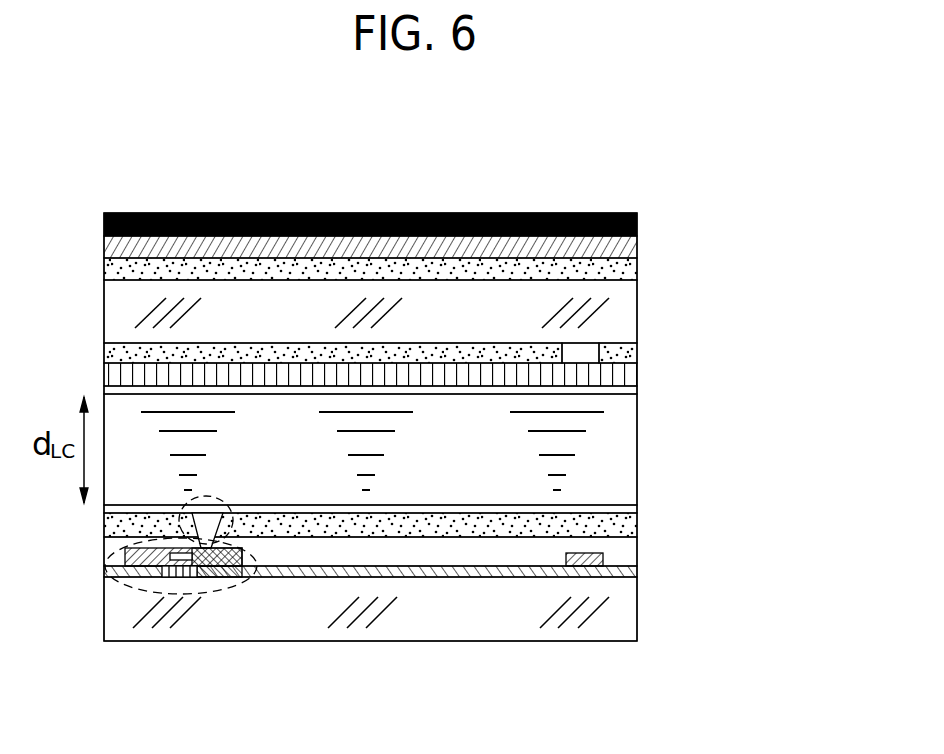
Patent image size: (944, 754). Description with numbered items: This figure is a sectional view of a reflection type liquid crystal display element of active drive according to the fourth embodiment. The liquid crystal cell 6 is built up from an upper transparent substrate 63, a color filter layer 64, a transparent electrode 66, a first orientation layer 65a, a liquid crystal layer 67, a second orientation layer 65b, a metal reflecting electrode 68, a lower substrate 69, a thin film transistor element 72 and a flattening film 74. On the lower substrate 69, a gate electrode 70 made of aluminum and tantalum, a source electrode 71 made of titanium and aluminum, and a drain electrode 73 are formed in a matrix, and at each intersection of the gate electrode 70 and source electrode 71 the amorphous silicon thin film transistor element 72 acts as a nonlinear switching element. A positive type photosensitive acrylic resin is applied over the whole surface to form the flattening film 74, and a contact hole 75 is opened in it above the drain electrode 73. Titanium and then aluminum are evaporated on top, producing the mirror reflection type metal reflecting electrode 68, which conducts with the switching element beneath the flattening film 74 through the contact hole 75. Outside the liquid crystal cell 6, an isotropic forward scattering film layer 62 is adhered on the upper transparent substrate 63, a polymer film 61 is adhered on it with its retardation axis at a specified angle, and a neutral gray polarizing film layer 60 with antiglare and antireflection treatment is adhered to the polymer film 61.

The liquid crystal cell 6 is at (505, 427).
The polarizing film layer 60 is at (637, 217).
The polymer film 61 is at (630, 247).
The scattering film layer 62 is at (630, 271).
The upper transparent substrate 63 is at (622, 314).
The color filter layer 64 is at (620, 355).
The transparent electrode 66 is at (628, 377).
The first orientation layer 65a is at (630, 391).
The liquid crystal layer 67 is at (622, 458).
The second orientation layer 65b is at (630, 507).
The metal reflecting electrode 68 is at (630, 528).
The flattening film 74 is at (615, 548).
The lower substrate 69 is at (622, 613).
The contact hole 75 is at (180, 509).
The gate electrode 70 is at (195, 624).
The thin film transistor element 72 is at (217, 587).
The drain electrode 73 is at (240, 563).
The source electrode 71 is at (587, 560).